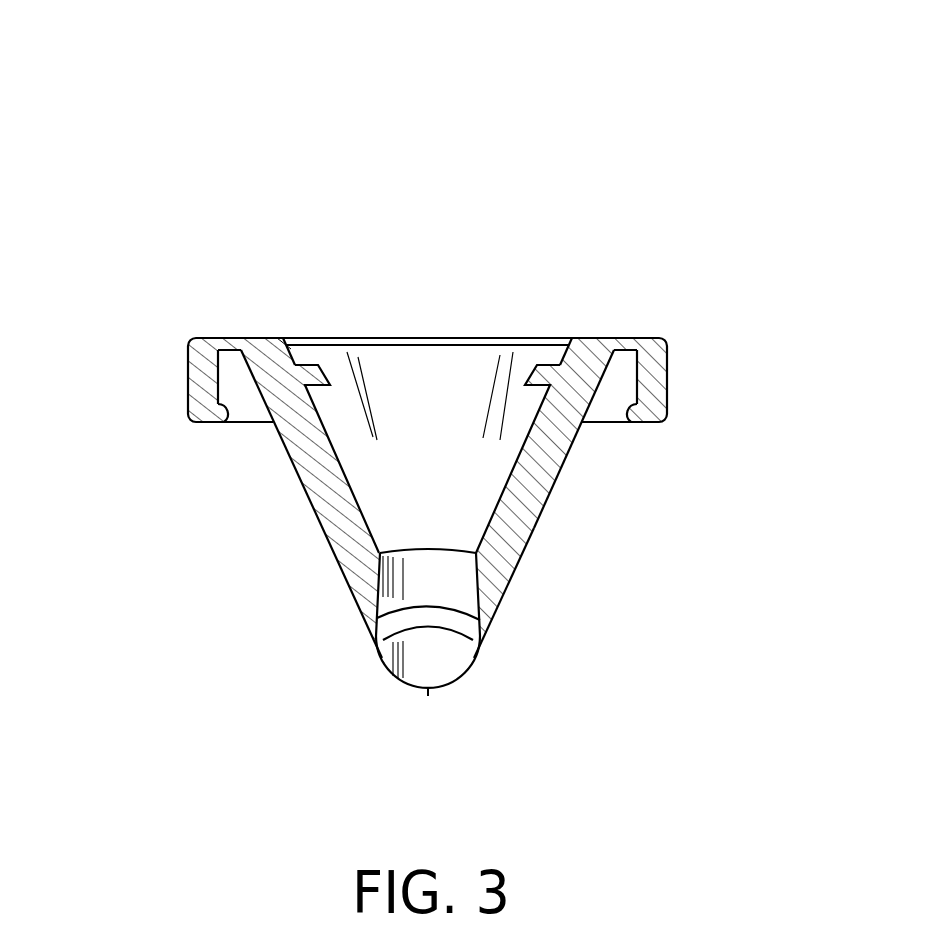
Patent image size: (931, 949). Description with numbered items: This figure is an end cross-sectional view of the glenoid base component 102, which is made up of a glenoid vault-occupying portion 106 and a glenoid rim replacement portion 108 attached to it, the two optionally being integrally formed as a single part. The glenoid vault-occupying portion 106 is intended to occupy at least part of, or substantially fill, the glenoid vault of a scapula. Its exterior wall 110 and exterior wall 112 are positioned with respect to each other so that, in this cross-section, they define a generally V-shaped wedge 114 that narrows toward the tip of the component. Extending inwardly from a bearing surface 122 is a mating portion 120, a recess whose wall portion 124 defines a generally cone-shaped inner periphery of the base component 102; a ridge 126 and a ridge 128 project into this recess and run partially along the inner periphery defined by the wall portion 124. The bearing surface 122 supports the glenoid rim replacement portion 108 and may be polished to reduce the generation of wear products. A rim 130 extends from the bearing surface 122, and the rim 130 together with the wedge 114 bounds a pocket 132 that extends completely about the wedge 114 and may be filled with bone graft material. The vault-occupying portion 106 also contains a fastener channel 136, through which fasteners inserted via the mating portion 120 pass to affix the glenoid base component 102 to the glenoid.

The glenoid base component 102 is at (439, 401).
The glenoid vault-occupying portion 106 is at (353, 642).
The glenoid rim replacement portion 108 is at (630, 422).
The exterior wall 110 is at (533, 528).
The exterior wall 112 is at (326, 538).
The V-shaped wedge 114 is at (515, 562).
The mating portion 120 is at (421, 378).
The bearing surface 122 is at (597, 337).
The wall portion 124 is at (327, 426).
The ridge 126 is at (321, 364).
The ridge 128 is at (533, 371).
The rim 130 is at (188, 392).
The pocket 132 is at (222, 416).
The fastener channel 136 is at (430, 694).